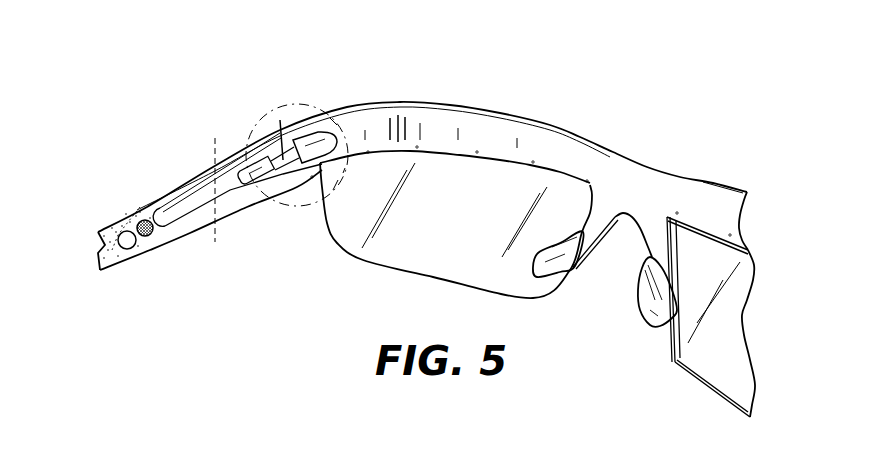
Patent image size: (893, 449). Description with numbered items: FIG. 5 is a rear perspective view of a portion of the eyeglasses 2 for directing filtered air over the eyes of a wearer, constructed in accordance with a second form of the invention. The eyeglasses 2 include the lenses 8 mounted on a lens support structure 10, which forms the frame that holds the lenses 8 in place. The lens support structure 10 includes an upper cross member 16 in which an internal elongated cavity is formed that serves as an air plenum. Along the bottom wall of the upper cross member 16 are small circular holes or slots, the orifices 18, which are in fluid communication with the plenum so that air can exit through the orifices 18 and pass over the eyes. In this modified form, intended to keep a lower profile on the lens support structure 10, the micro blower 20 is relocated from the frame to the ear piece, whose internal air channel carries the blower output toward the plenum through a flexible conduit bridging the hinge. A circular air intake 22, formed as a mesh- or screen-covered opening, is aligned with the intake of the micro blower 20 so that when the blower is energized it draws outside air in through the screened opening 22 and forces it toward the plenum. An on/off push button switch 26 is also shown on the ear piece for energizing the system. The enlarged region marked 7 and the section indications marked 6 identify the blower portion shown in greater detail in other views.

The eyeglasses 2 is at (423, 208).
The section line 6 is at (182, 158).
The cartridge assembly 7 is at (299, 92).
The lenses 8 is at (363, 262).
The lens support structure 10 is at (426, 231).
The upper cross member 16 is at (632, 173).
The orifices 18 is at (418, 150).
The micro blowers 20 is at (140, 207).
The circular air intake 22 is at (152, 242).
The on/off push button switch 26 is at (130, 253).